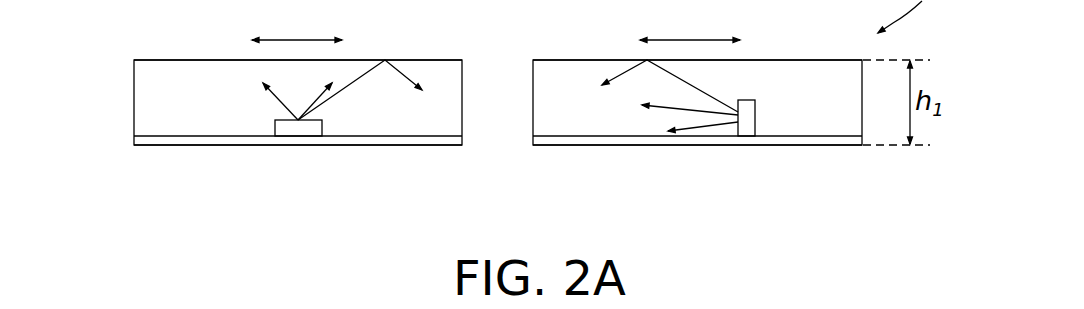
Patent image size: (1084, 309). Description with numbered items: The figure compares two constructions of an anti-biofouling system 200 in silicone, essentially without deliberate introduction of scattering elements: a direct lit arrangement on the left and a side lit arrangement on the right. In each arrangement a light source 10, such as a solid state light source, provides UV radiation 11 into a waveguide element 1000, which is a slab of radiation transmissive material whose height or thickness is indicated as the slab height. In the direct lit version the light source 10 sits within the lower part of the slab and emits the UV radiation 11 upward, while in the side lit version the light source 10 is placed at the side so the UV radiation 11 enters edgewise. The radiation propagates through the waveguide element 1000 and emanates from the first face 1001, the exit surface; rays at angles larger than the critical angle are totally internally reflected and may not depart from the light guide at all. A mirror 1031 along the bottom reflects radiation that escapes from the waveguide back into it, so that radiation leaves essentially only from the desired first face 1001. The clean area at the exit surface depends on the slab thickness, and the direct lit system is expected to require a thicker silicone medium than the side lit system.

The waveguide element 1000 is at (128, 80).
The first face 1001 is at (447, 61).
The mirror 1031 is at (363, 145).
The anti-biofouling system 200 is at (135, 150).
The light source 10 is at (763, 132).
The UV radiation 11 is at (285, 101).